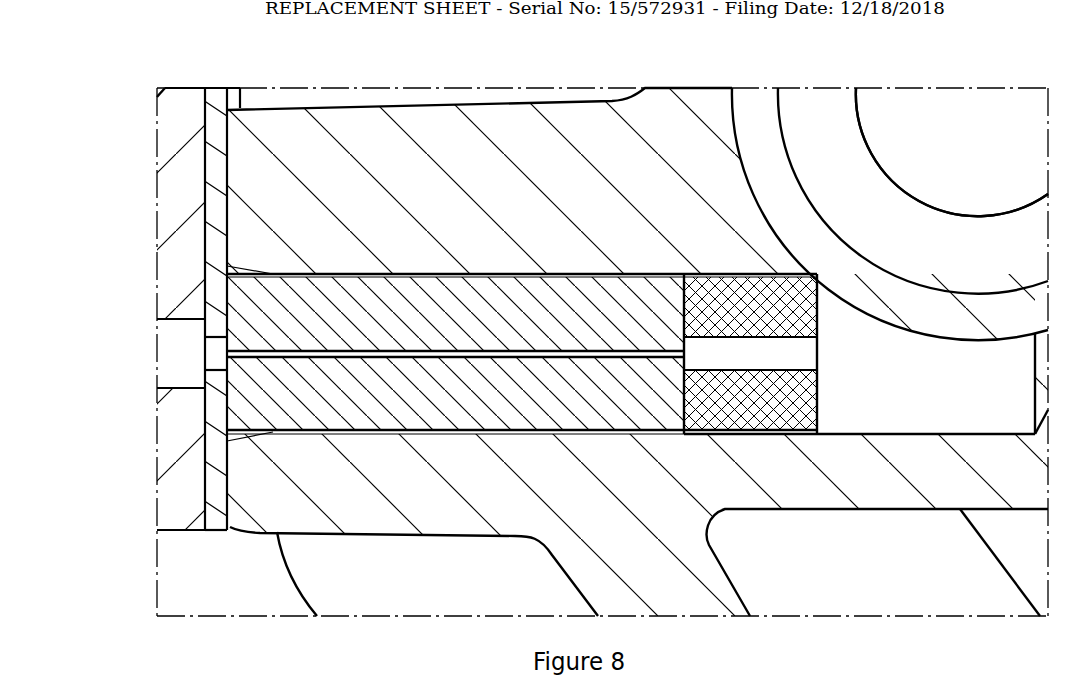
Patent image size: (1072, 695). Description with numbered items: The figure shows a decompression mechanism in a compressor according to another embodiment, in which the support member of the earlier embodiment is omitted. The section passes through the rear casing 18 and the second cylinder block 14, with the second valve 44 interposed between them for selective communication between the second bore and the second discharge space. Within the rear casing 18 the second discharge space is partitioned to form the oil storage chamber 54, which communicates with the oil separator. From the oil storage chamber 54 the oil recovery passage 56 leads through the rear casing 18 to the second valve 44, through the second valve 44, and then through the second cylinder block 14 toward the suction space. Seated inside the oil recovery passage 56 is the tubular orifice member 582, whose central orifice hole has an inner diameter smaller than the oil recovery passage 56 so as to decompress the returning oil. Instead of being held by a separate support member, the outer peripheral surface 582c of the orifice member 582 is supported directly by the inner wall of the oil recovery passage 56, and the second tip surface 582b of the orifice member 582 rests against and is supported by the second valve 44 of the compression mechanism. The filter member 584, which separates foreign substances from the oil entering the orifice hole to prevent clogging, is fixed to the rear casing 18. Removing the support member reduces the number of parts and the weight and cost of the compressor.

The second cylinder block 14 is at (179, 126).
The second valve 44 is at (218, 127).
The rear casing 18 is at (683, 138).
The oil storage chamber 54 is at (946, 141).
The oil recovery passage 56 is at (445, 275).
The orifice member 582 is at (363, 264).
The second tip surface 582b is at (225, 415).
The outer peripheral surface 582c is at (588, 274).
The filter member 584 is at (779, 442).